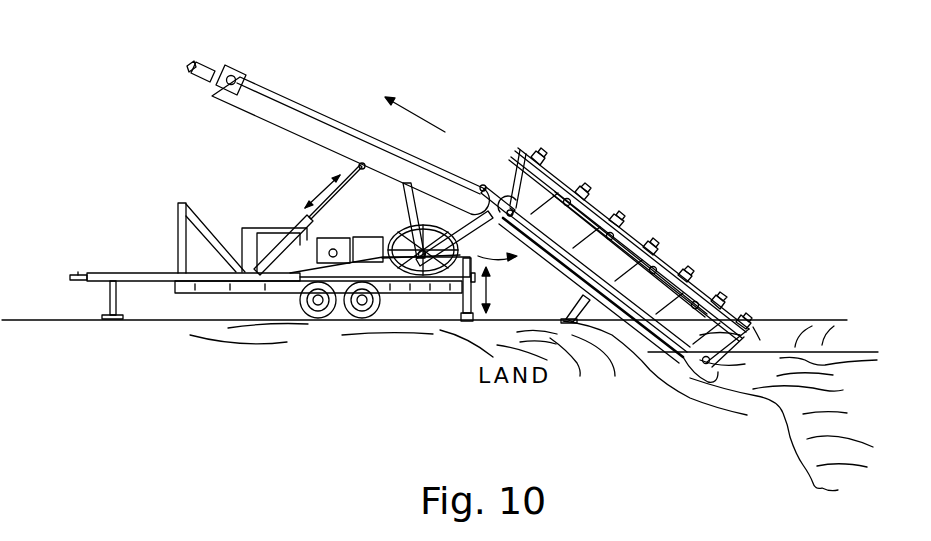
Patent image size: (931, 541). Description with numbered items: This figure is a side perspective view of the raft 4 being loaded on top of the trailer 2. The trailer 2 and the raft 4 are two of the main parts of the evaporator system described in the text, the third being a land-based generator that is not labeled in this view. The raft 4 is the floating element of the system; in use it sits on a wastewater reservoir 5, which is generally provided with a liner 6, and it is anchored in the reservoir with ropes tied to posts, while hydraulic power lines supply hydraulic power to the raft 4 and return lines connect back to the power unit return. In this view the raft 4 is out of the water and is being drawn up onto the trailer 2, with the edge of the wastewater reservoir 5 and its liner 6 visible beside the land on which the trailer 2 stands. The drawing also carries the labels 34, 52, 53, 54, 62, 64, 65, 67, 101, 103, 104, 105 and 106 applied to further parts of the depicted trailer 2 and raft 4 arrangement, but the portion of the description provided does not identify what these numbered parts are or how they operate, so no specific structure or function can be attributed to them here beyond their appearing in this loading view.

The trailer 2 is at (143, 273).
The raft 4 is at (672, 198).
The wastewater reservoir 5 is at (878, 404).
The liner 6 is at (750, 388).
The ramp pivot bracket 34 is at (507, 170).
The mast 52 is at (178, 212).
The boom 53 is at (280, 127).
The boom rod end 54 is at (203, 73).
The hydraulic cylinder 62 is at (300, 225).
The pivot link 64 is at (433, 230).
The pivot link 65 is at (483, 193).
The winch reel 67 is at (372, 247).
The telescoping boom section 101 is at (280, 92).
The stabilizer leg 103 is at (462, 312).
The boom support post 104 is at (408, 193).
The vertical adjustment 105 is at (557, 272).
The ramp ground support 106 is at (570, 322).